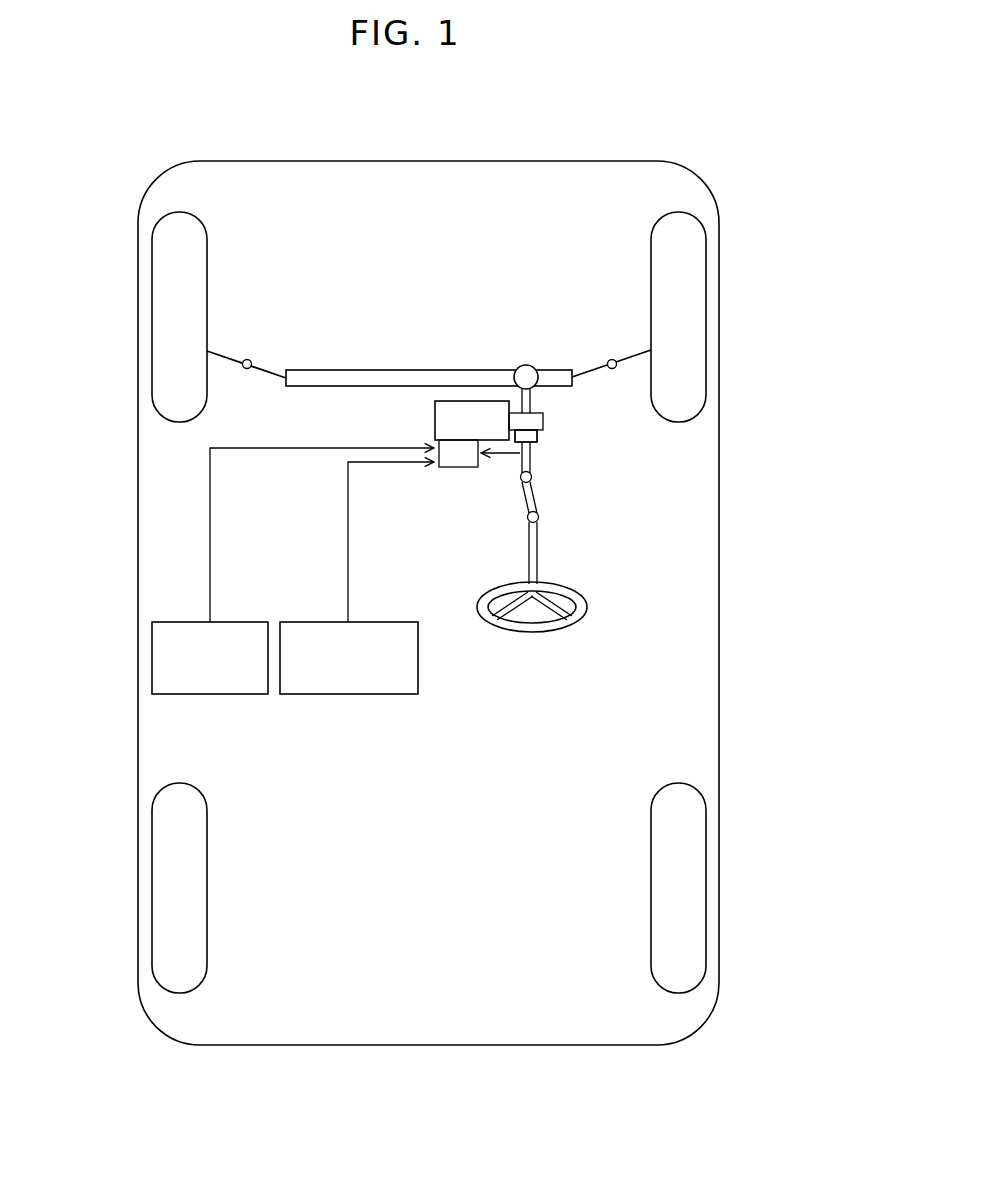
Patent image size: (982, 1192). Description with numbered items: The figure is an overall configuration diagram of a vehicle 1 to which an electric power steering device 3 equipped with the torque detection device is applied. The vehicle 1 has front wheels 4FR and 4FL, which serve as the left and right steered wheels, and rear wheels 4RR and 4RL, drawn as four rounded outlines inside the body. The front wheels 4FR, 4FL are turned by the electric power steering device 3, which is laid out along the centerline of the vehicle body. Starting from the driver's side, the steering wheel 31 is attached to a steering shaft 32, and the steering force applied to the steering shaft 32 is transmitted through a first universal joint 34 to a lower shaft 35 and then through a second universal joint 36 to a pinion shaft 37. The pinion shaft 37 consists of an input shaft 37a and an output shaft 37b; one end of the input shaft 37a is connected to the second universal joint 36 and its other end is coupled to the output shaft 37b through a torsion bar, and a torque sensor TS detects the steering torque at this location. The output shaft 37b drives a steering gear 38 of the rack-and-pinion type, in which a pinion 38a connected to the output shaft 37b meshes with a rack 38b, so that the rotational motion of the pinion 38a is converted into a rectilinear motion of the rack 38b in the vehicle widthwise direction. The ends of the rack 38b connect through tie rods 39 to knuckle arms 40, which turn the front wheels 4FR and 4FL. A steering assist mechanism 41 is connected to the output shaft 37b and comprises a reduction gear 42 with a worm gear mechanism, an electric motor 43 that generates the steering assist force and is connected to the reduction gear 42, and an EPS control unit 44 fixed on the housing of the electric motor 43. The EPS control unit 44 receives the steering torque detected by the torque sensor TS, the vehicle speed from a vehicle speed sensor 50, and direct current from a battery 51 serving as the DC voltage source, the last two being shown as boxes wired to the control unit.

The vehicle 1 is at (712, 592).
The electric power steering device 3 is at (594, 648).
The front wheel 4FL is at (165, 296).
The front wheel 4FR is at (690, 310).
The rear wheel 4RL is at (165, 874).
The rear wheel 4RR is at (685, 882).
The steering wheel 31 is at (528, 634).
The steering shaft 32 is at (538, 546).
The first universal joint 34 is at (527, 519).
The lower shaft 35 is at (536, 496).
The second universal joint 36 is at (520, 481).
The pinion shaft 37 is at (539, 459).
The input shaft 37a is at (518, 462).
The output shaft 37b is at (534, 402).
The steering gear 38 is at (429, 331).
The pinion 38a is at (528, 366).
The rack 38b is at (470, 370).
The tie rod 39 is at (268, 366).
The knuckle arm 40 is at (230, 356).
The steering assist mechanism 41 is at (539, 436).
The reduction gear 42 is at (546, 418).
The electric motor 43 is at (435, 420).
The EPS control unit 44 is at (439, 466).
The vehicle speed sensor 50 is at (350, 694).
The battery 51 is at (213, 694).
The torque sensor TS is at (534, 458).